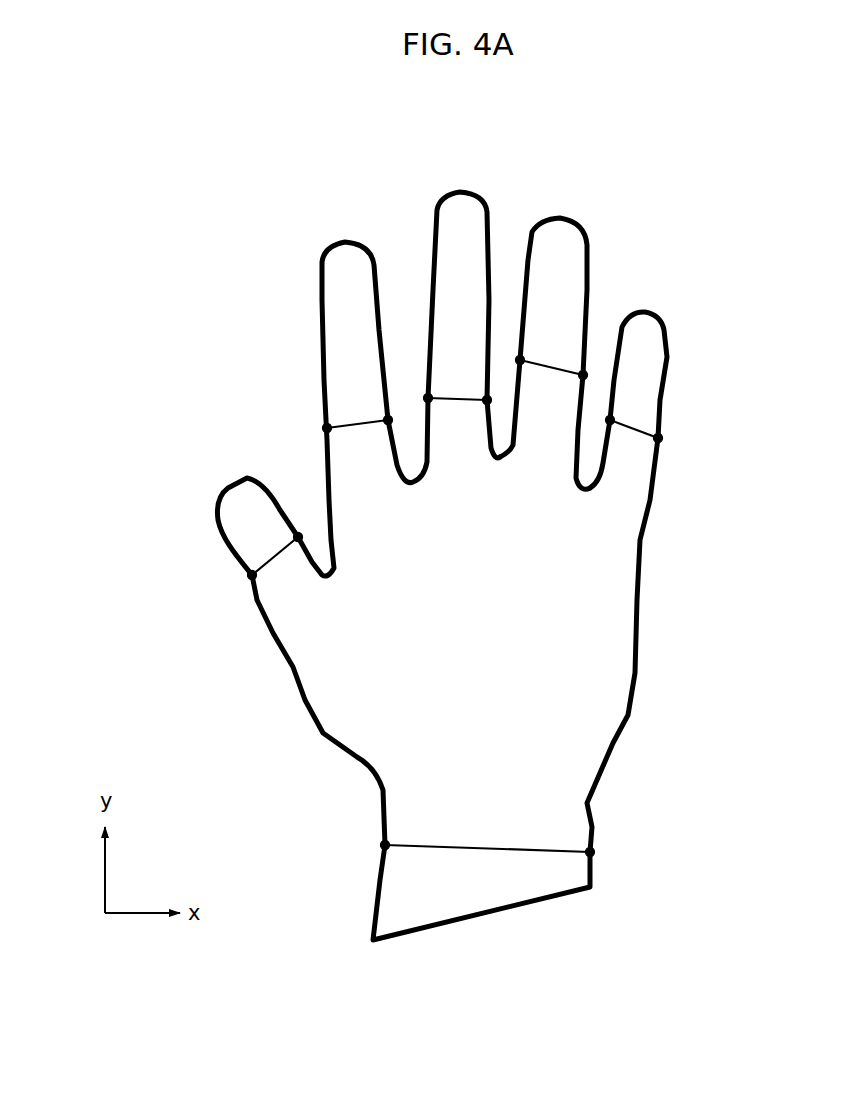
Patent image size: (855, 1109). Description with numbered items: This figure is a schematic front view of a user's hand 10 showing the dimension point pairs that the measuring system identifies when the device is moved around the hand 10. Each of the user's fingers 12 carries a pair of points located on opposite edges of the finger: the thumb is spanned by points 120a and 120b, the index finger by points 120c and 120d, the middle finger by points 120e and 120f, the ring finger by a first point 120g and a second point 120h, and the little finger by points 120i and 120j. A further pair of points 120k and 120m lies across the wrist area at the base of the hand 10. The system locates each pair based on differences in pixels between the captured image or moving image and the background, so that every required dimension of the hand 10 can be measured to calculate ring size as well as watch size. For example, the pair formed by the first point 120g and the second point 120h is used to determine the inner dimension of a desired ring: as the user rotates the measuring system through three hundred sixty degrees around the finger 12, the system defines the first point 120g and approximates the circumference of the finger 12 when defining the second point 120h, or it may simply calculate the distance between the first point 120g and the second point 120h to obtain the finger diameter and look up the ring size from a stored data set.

The user's hand 10 is at (403, 529).
The user's finger 12 is at (540, 258).
The dimension point 120a is at (249, 581).
The dimension point 120b is at (293, 537).
The dimension point 120c is at (322, 427).
The dimension point 120d is at (384, 417).
The dimension point 120e is at (426, 392).
The dimension point 120f is at (485, 394).
The first point 120g is at (523, 355).
The second point 120h is at (586, 370).
The dimension point 120i is at (615, 416).
The dimension point 120j is at (663, 436).
The dimension point 120k is at (382, 849).
The dimension point 120m is at (594, 855).